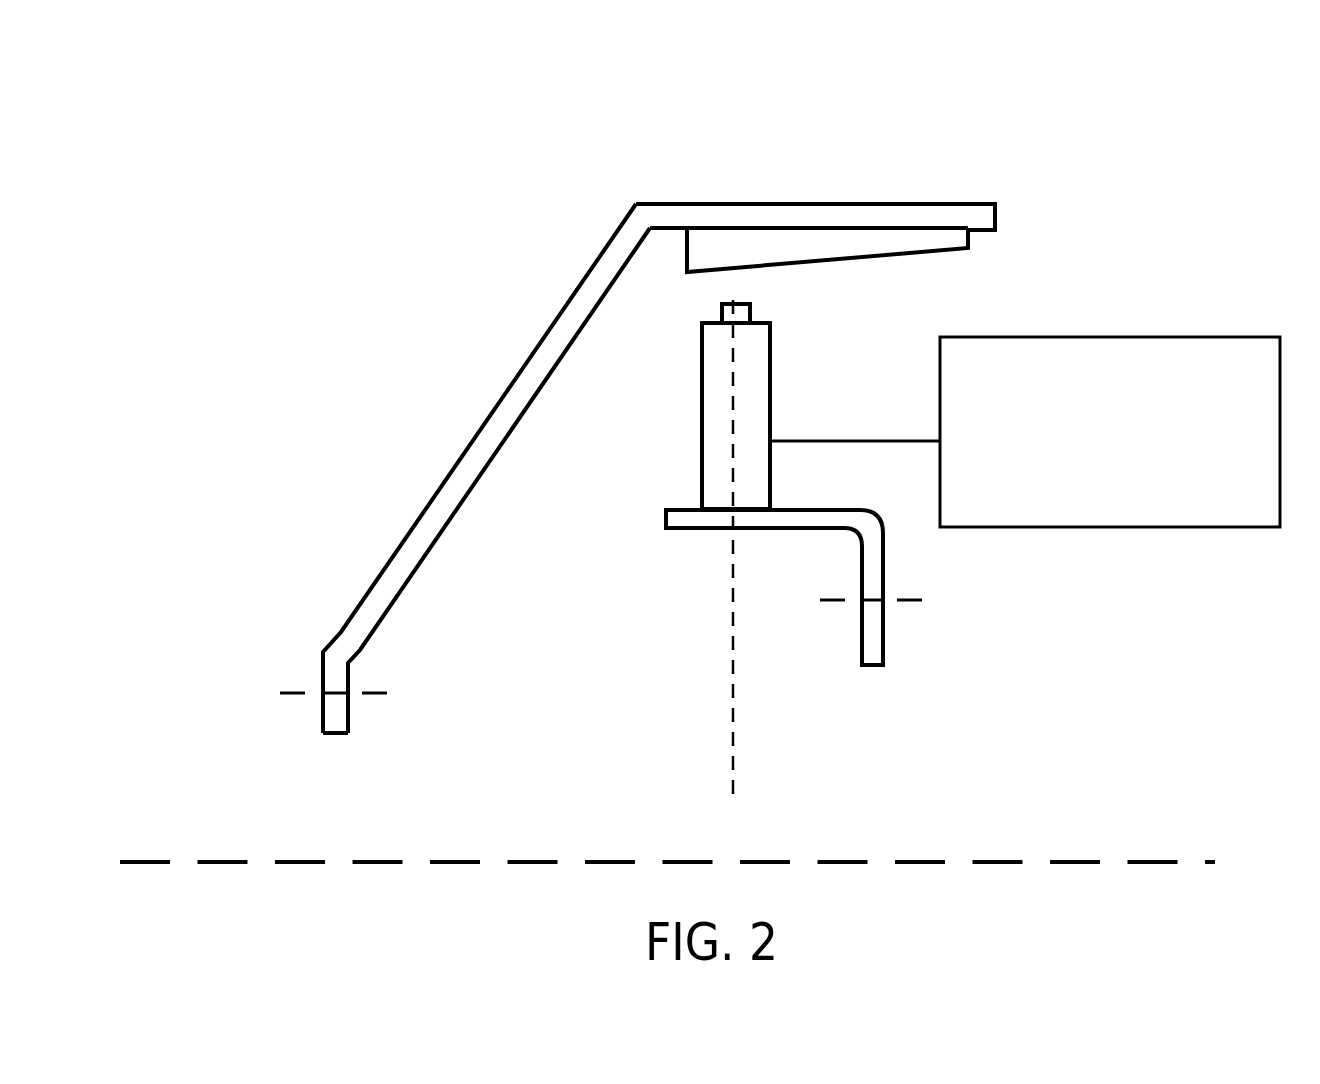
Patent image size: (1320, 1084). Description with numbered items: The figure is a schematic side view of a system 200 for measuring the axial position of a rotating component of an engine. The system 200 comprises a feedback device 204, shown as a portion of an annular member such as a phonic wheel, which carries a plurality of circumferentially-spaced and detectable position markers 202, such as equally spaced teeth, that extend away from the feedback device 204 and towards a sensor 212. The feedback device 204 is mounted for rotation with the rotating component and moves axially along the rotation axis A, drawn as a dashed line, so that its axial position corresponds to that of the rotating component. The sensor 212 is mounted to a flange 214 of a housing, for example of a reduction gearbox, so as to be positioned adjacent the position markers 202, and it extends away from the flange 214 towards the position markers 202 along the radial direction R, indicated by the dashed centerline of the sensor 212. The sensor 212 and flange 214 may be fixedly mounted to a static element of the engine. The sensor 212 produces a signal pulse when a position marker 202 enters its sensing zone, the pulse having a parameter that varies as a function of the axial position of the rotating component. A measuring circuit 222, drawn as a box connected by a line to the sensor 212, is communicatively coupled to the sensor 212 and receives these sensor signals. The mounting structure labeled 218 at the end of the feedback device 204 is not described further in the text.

The system 200 is at (362, 173).
The position markers 202 is at (847, 247).
The feedback device 204 is at (350, 612).
The sensor 212 is at (700, 392).
The flange 214 is at (667, 522).
The top frame bracket 218 is at (1000, 217).
The measuring circuit 222 is at (1082, 514).
The radial direction R is at (733, 690).
The rotation axis A is at (220, 858).